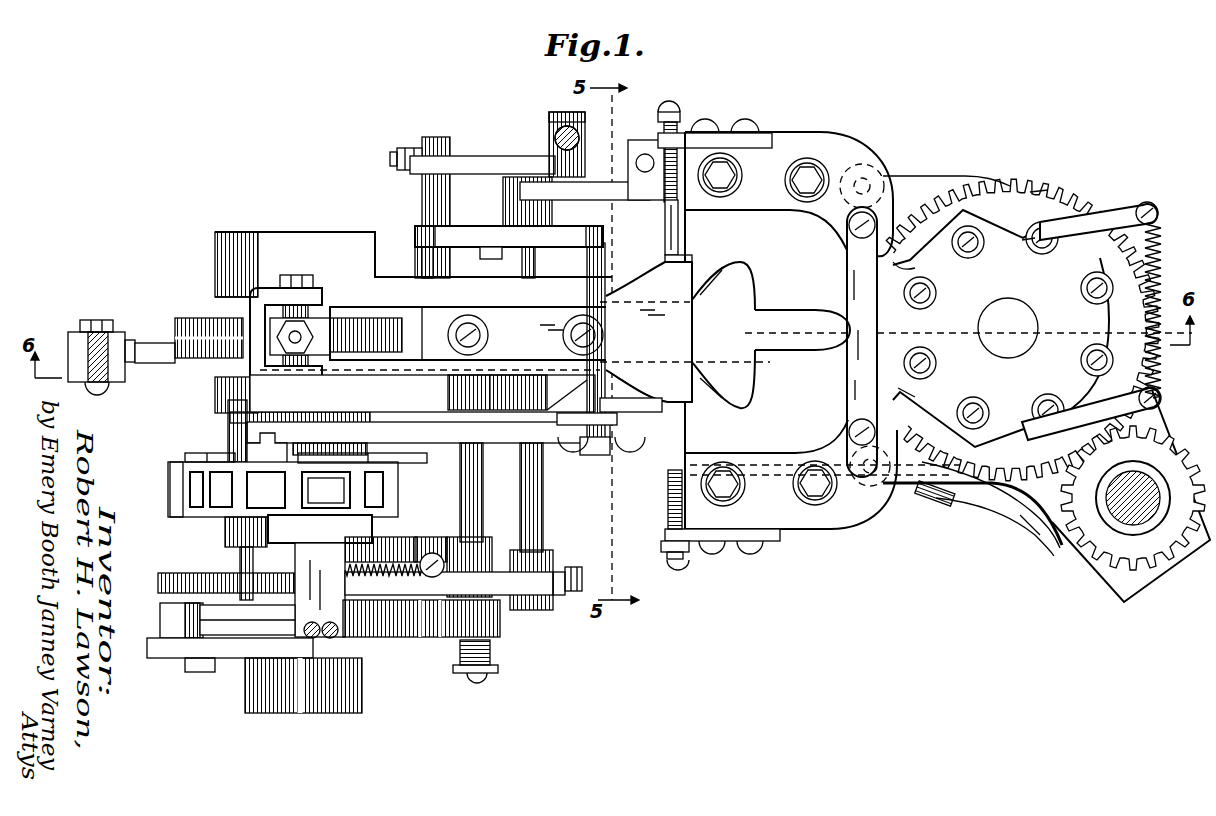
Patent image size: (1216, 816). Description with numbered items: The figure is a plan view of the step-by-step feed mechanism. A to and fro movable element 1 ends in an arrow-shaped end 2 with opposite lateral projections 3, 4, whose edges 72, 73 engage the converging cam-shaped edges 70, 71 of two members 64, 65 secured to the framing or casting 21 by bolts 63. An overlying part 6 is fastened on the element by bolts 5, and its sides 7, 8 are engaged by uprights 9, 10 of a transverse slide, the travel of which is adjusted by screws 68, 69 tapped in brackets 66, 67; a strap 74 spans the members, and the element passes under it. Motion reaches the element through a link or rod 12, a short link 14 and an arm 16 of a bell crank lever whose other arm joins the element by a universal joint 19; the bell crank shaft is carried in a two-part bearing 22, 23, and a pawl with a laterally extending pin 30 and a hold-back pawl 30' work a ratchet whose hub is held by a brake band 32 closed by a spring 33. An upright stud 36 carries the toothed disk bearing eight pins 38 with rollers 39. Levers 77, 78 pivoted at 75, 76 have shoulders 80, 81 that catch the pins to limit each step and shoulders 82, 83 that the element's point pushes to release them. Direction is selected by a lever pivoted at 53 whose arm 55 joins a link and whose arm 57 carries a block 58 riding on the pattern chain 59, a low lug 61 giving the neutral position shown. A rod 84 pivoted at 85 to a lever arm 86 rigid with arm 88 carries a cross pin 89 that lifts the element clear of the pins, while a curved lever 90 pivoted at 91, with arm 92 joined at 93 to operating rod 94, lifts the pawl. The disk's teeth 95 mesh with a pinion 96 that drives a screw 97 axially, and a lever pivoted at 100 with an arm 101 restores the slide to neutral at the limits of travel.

The to and fro movable element 1 is at (748, 333).
The pointed or tongue or arrow shaped end 2 is at (812, 318).
The lateral projection 3 is at (724, 292).
The lateral projection 4 is at (722, 370).
The bolts 5 is at (468, 315).
The overlying part 6 is at (655, 288).
The side of the part 7 is at (668, 264).
The side of the part 8 is at (668, 412).
The upright 9 is at (678, 232).
The upright 10 is at (672, 410).
The link or rod 12 is at (108, 335).
The short link or member 14 is at (82, 338).
The arm of bell crank lever 16 is at (158, 350).
The universal joint 19 is at (1160, 232).
The framing or casting 21 is at (487, 268).
The bearing part 22 is at (215, 392).
The bearing part 23 is at (215, 254).
The laterally extending pin 30 is at (265, 589).
The hold-back pawl 30' is at (441, 641).
The brake band 32 is at (475, 545).
The spring 33 is at (385, 562).
The upright stud 36 is at (1007, 312).
The pins or bolts 38 is at (1097, 282).
The small roller 39 is at (1086, 284).
The pivot 53 is at (480, 444).
The arm of lever 55 is at (562, 440).
The arm of lever 57 is at (441, 436).
The block or lateral extension 58 is at (256, 450).
The pattern chain 59 is at (160, 465).
The low lug 61 is at (388, 412).
The bolts 63 is at (725, 178).
The member 64 is at (790, 146).
The member 65 is at (812, 510).
The strap or bracket 66 is at (724, 133).
The strap or bracket 67 is at (738, 541).
The adjusting screw 68 is at (677, 118).
The adjusting screw 69 is at (668, 494).
The cam shaped edge 70 is at (818, 220).
The cam shaped edge 71 is at (826, 446).
The edge 72 is at (740, 265).
The edge 73 is at (742, 402).
The strap 74 is at (852, 377).
The pivot 75 is at (866, 185).
The pivot 76 is at (886, 488).
The lever 77 is at (958, 182).
The lever 78 is at (988, 490).
The shoulder 80 is at (1024, 235).
The shoulder 81 is at (1032, 418).
The shoulder 82 is at (912, 266).
The shoulder 83 is at (908, 388).
The rod 84 is at (562, 125).
The pivotal connection 85 is at (549, 117).
The lever arm 86 is at (526, 160).
The lever arm 88 is at (422, 203).
The cross pin 89 is at (590, 455).
The curved lever arm 90 is at (190, 580).
The pivot 91 is at (543, 506).
The lever arm 92 is at (612, 192).
The pivotal connection 93 is at (638, 150).
The operating rod 94 is at (647, 160).
The teeth 95 is at (1040, 192).
The pinion 96 is at (1155, 447).
The screw 97 is at (1132, 512).
The pivot 100 is at (942, 500).
The arm 101 is at (1035, 527).